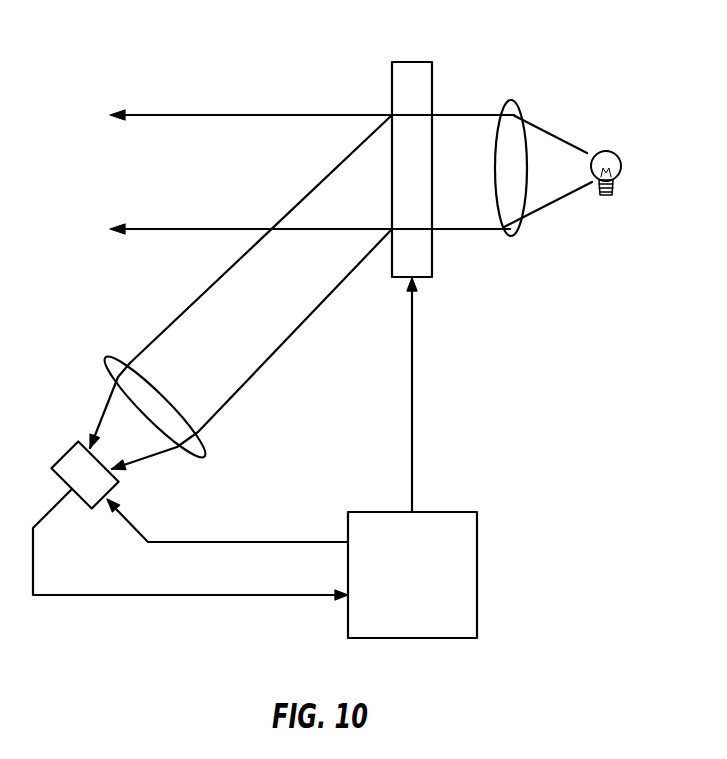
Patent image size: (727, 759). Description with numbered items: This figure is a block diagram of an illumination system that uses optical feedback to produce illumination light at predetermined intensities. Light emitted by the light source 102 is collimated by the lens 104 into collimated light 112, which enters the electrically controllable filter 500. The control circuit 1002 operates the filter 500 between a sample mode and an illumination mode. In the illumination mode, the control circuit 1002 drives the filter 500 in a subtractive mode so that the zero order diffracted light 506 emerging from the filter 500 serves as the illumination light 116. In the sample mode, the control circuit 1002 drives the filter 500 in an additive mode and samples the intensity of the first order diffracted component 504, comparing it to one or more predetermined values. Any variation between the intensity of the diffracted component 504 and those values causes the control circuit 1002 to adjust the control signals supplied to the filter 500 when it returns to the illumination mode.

The filter 500 is at (433, 148).
The collimated light 112 is at (453, 171).
The lens 104 is at (543, 152).
The light source 102 is at (631, 152).
The zero order diffracted light 506 is at (251, 155).
The illumination light 116 is at (251, 155).
The first order diffracted component 504 is at (241, 292).
The control circuit 1002 is at (436, 458).